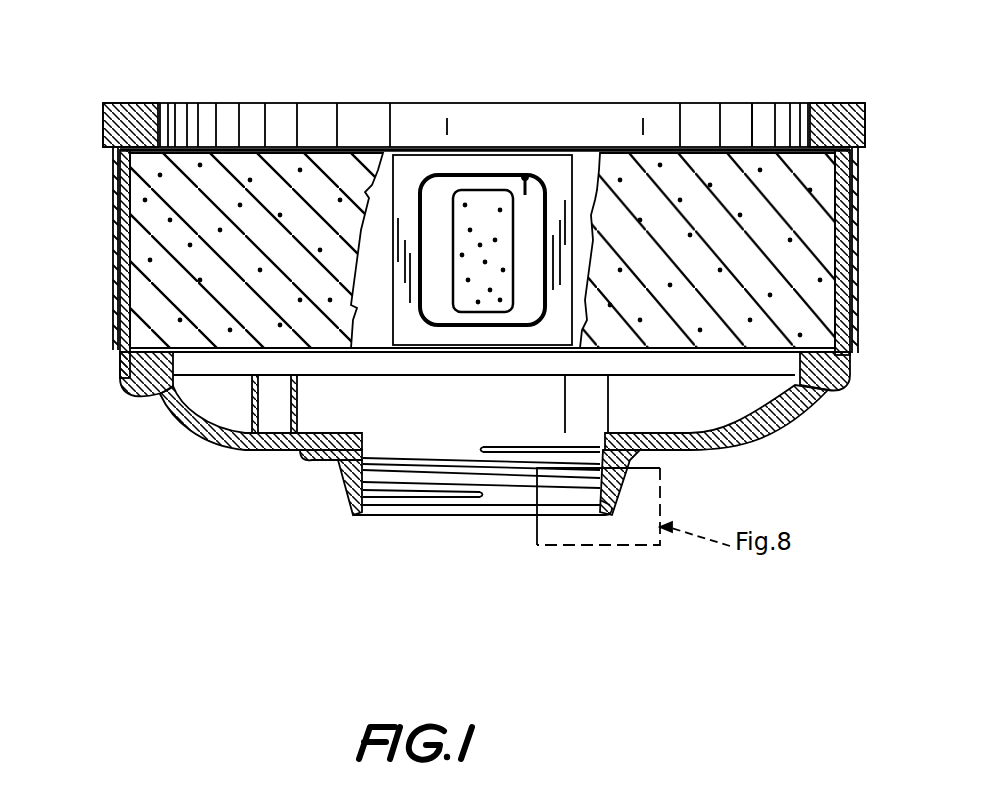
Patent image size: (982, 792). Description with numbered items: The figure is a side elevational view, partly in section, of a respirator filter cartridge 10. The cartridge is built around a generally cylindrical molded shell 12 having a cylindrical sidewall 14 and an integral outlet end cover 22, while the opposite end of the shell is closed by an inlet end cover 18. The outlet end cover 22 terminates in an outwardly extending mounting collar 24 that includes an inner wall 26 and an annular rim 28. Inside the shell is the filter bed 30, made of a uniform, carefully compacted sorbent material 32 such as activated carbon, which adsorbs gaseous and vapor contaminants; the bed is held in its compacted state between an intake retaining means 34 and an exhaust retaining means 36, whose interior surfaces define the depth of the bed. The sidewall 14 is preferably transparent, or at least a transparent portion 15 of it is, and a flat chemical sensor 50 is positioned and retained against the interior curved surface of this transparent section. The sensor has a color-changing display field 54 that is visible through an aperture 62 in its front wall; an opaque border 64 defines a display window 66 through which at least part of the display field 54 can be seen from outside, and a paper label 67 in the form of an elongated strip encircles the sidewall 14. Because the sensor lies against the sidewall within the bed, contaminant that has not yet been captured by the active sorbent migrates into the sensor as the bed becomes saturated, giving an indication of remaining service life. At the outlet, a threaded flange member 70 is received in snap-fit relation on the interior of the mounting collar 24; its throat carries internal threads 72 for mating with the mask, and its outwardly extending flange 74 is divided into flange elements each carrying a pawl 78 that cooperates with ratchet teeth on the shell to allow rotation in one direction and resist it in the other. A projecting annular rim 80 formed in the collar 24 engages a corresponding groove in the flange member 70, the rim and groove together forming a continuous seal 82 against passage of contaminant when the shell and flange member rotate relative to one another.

The cartridge 10 is at (108, 212).
The shell 12 is at (115, 388).
The sidewall 14 is at (114, 284).
The transparent portion of the sidewall 15 is at (378, 143).
The inlet end cover 18 is at (231, 103).
The outlet end cover 22 is at (172, 426).
The mounting collar 24 is at (623, 472).
The inner wall 26 is at (340, 460).
The annular rim 28 is at (600, 512).
The filter bed 30 is at (822, 205).
The sorbent material 32 is at (818, 288).
The intake retaining means 34 is at (735, 132).
The exhaust retaining means 36 is at (830, 407).
The chemical sensor 50 is at (525, 176).
The color-changing display field 54 is at (490, 196).
The aperture 62 is at (477, 196).
The opaque border 64 is at (557, 187).
The display window 66 is at (435, 190).
The paper label 67 is at (382, 240).
The threaded flange member 70 is at (553, 505).
The internal threads 72 is at (575, 480).
The outwardly extending flange 74 is at (280, 450).
The pawl 78 is at (668, 447).
The projecting annular rim 80 is at (355, 500).
The seal 82 is at (350, 505).